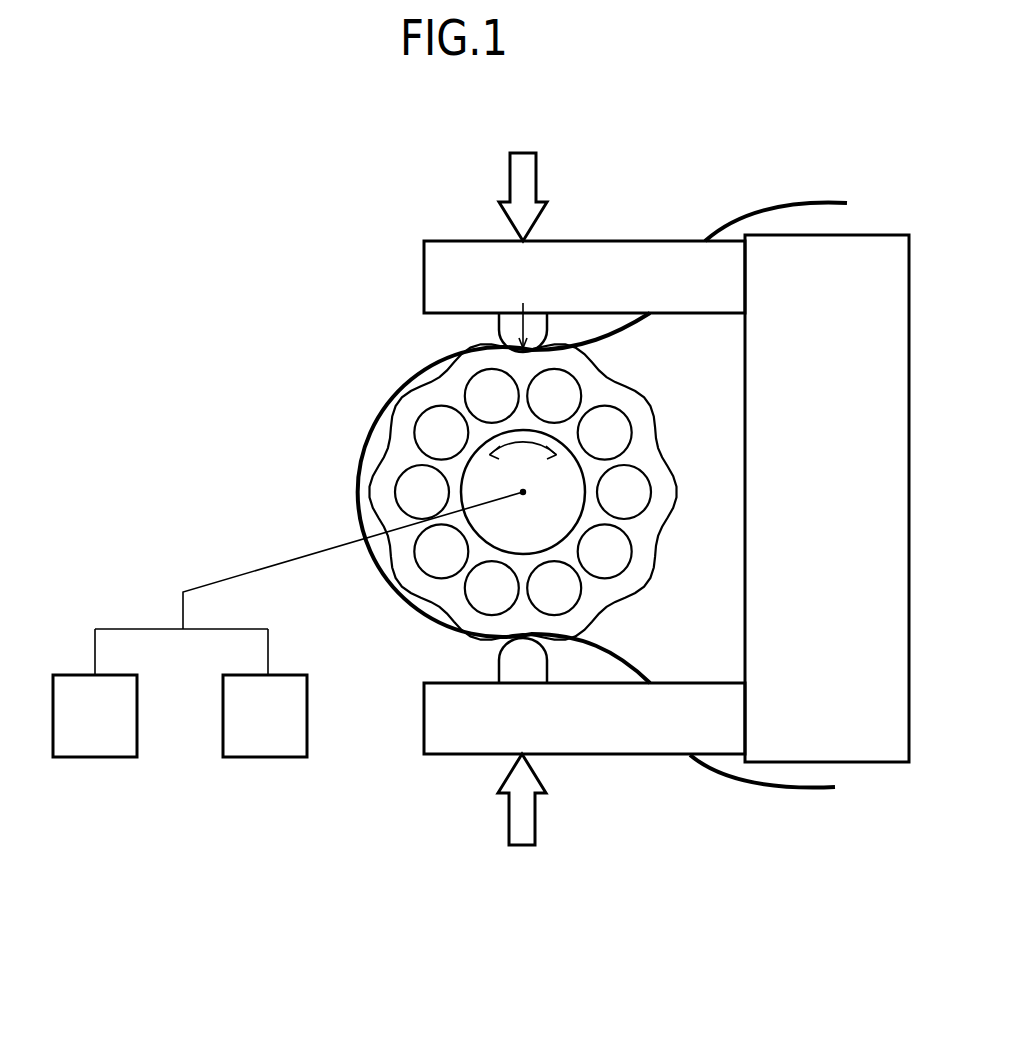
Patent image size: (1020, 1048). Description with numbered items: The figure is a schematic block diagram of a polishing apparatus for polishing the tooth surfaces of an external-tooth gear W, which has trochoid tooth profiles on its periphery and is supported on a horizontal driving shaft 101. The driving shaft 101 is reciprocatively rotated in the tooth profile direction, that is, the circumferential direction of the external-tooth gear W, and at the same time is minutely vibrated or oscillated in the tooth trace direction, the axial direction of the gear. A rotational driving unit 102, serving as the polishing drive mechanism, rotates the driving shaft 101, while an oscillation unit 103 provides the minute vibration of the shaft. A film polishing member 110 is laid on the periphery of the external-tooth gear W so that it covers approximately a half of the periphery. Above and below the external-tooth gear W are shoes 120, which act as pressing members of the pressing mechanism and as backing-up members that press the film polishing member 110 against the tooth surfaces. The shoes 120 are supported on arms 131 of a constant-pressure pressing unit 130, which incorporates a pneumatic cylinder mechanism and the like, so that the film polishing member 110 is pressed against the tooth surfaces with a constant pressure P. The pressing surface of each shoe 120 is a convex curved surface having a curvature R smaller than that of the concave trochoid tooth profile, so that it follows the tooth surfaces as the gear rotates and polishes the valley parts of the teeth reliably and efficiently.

The driving shaft 101 is at (498, 534).
The rotational driving unit 102 is at (264, 743).
The oscillation unit 103 is at (94, 743).
The film polishing member 110 is at (378, 424).
The shoes 120 is at (499, 331).
The constant-pressure pressing unit 130 is at (798, 250).
The arms 131 is at (645, 252).
The external-tooth gear W is at (378, 486).
The curvature R is at (521, 312).
The constant pressure P is at (522, 502).